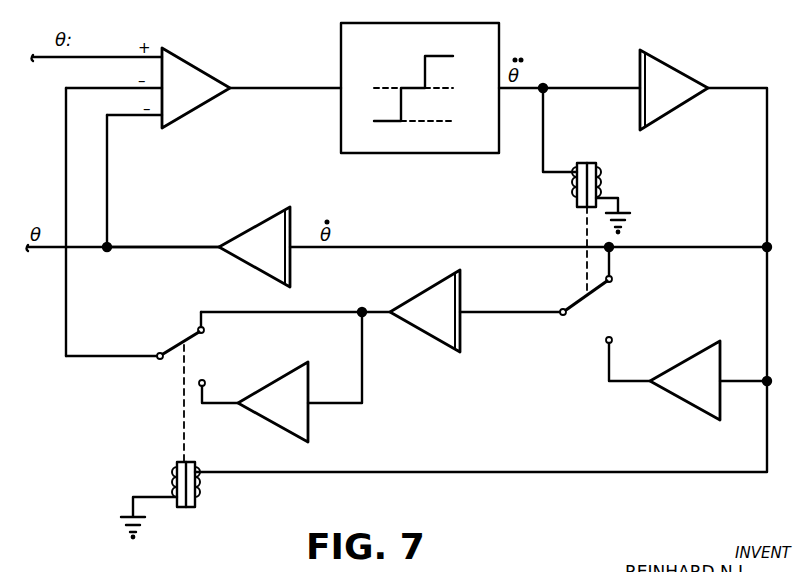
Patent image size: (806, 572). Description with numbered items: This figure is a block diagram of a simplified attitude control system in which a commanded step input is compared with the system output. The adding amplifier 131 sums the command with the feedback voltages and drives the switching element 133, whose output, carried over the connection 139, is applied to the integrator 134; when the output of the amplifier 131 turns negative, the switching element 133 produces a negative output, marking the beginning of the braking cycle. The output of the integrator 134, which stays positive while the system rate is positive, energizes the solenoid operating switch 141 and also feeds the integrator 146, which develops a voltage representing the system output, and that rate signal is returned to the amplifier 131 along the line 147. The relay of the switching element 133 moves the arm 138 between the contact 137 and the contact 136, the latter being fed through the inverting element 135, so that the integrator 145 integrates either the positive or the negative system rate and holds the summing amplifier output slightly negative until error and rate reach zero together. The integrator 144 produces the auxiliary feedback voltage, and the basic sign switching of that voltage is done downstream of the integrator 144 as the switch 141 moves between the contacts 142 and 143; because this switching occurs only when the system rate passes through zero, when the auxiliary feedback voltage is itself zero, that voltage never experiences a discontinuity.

The adding amplifier 131 is at (207, 69).
The switching element 133 is at (342, 42).
The integrator 134 is at (682, 68).
The inverting amplifier 135 is at (692, 402).
The contact 136 is at (607, 343).
The contact 137 is at (614, 281).
The arm 138 is at (585, 296).
The conductor 139 is at (578, 84).
The solenoid operating switch 141 is at (190, 335).
The contact 142 is at (212, 330).
The contact 143 is at (205, 382).
The integrator 144 is at (415, 296).
The integrator 145 is at (303, 420).
The integrator 146 is at (255, 223).
The conductor 147 is at (161, 249).